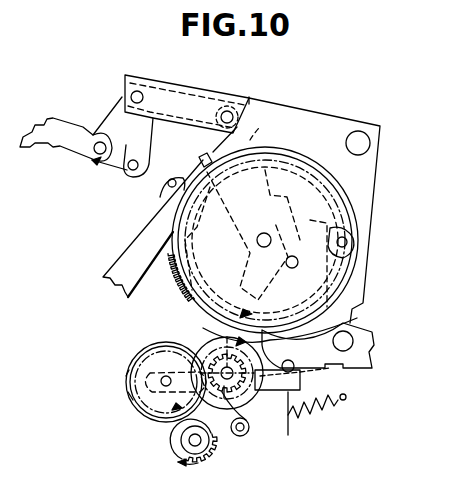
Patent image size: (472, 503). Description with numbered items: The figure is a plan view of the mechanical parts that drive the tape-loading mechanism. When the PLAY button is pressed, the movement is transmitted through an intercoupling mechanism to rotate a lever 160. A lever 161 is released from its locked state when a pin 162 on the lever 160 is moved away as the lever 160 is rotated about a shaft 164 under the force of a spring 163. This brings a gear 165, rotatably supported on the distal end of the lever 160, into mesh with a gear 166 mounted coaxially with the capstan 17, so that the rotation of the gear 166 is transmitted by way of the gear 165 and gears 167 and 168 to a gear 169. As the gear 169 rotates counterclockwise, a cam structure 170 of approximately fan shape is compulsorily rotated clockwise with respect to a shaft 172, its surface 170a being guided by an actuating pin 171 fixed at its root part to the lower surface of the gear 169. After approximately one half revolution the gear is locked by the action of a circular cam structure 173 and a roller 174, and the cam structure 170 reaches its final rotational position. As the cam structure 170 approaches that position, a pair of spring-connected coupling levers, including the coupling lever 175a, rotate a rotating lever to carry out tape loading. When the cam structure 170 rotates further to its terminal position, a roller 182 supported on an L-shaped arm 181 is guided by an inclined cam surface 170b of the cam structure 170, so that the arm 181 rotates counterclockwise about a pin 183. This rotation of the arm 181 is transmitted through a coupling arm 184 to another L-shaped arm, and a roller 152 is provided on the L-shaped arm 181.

The capstan 17 is at (191, 444).
The roller 152 is at (127, 171).
The lever 160 is at (373, 348).
The lever 161 is at (289, 425).
The pin 162 is at (305, 382).
The spring 163 is at (315, 414).
The shaft 164 is at (227, 335).
The gear 165 is at (135, 354).
The gear 166 is at (178, 436).
The gear 167 is at (224, 398).
The gear 168 is at (224, 398).
The gear 169 is at (157, 235).
The cam structure 170 is at (289, 104).
The surface 170a is at (265, 240).
The inclined cam surface 170b is at (204, 158).
The actuating pin 171 is at (271, 232).
The shaft 172 is at (357, 131).
The circular cam structure 173 is at (190, 297).
The roller 174 is at (350, 232).
The coupling lever 175a is at (150, 223).
The L-shaped arm 181 is at (192, 86).
The roller 182 is at (231, 106).
The pin 183 is at (137, 90).
The coupling arm 184 is at (68, 123).